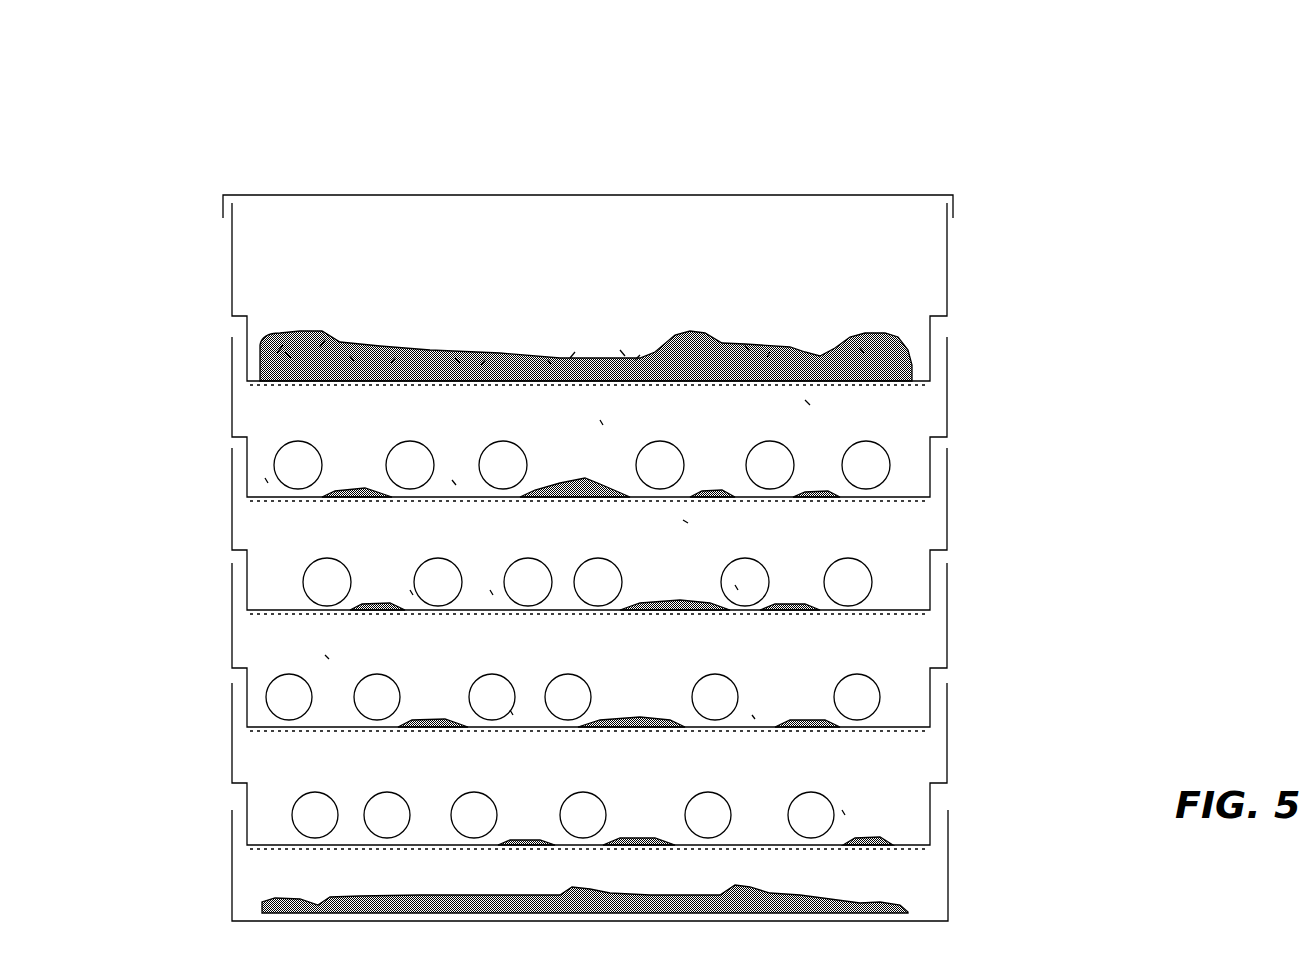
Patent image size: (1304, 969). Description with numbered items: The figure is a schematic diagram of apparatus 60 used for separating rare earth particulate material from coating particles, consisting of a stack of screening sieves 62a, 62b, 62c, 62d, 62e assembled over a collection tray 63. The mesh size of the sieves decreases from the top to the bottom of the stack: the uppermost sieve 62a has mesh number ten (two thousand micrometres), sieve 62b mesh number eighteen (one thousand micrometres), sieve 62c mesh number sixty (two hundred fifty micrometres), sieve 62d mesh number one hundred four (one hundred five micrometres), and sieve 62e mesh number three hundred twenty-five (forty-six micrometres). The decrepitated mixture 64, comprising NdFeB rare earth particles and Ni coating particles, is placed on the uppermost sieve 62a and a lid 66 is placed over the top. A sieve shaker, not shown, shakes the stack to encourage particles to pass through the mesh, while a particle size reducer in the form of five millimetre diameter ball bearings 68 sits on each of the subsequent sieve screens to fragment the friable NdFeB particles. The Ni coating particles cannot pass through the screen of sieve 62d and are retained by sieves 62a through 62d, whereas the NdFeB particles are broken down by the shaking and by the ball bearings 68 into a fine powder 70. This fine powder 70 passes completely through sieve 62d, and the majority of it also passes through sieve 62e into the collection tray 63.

The apparatus 60 is at (415, 158).
The sieve 62a is at (950, 255).
The sieve 62b is at (950, 360).
The sieve 62c is at (228, 512).
The sieve 62d is at (950, 620).
The sieve 62e is at (228, 733).
The collection tray 63 is at (950, 868).
The decrepitated mixture 64 is at (283, 332).
The lid 66 is at (848, 190).
The ball bearings 68 is at (893, 456).
The fine powder 70 is at (888, 830).